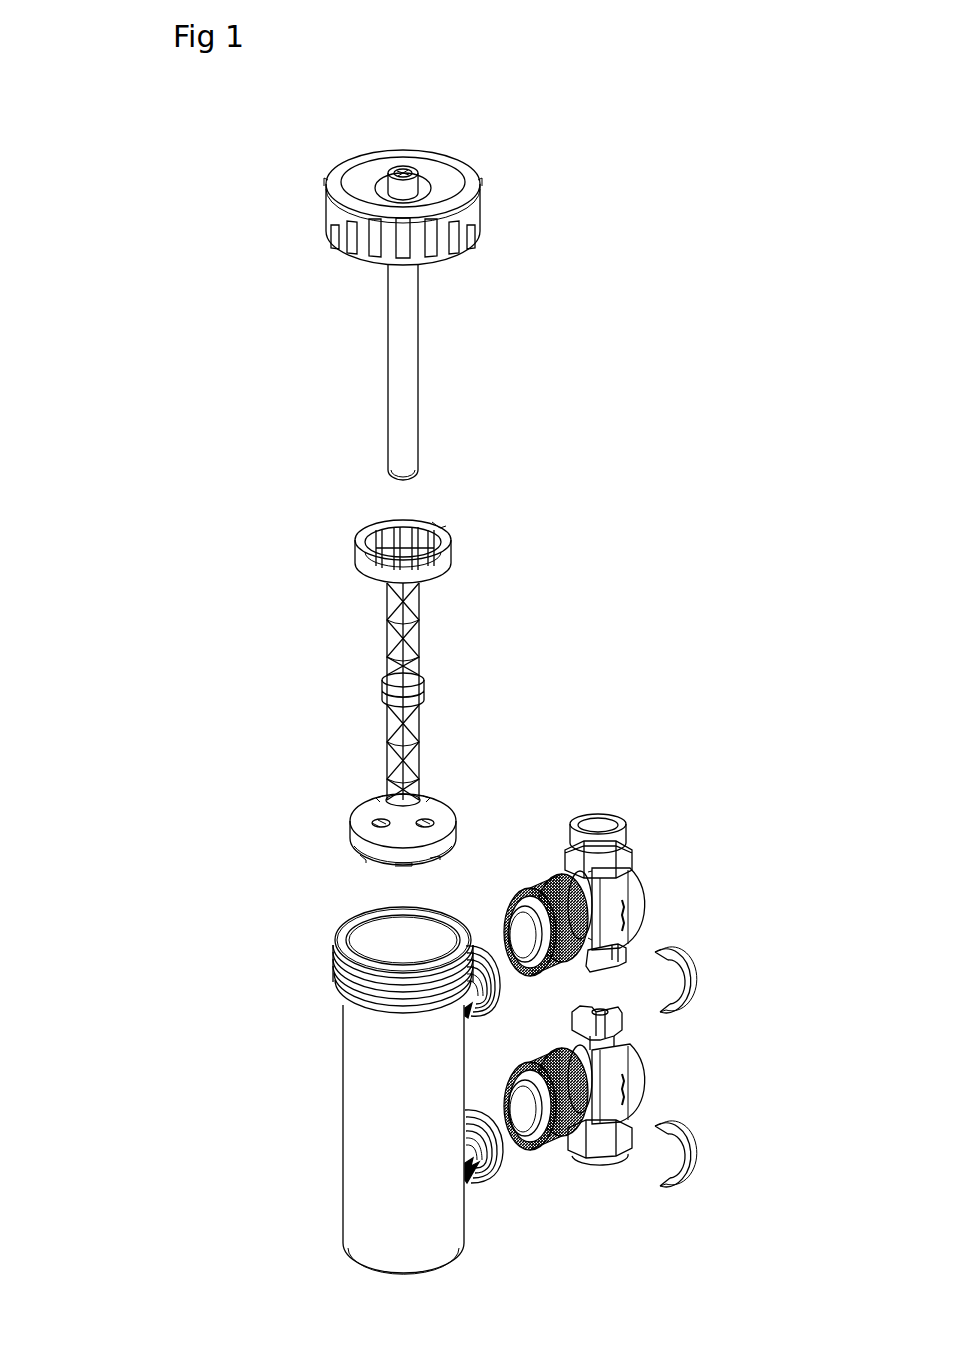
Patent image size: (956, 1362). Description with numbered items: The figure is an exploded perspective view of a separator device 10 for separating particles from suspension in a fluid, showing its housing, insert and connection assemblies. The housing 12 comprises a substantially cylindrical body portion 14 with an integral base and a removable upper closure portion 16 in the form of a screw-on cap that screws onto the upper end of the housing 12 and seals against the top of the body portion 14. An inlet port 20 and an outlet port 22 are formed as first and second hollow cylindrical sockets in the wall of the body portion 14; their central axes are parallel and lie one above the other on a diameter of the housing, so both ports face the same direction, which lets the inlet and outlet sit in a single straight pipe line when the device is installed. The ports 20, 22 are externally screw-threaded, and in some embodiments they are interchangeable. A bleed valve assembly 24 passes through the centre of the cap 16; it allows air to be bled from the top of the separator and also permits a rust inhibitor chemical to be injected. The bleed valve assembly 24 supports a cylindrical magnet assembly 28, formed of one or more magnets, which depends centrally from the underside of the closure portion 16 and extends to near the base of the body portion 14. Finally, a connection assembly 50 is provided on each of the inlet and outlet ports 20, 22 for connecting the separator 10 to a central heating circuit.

The separator device 10 is at (184, 981).
The housing 12 is at (443, 1218).
The cylindrical body portion 14 is at (361, 1114).
The upper closure portion 16 is at (441, 195).
The inlet port 20 is at (489, 952).
The outlet port 22 is at (500, 1151).
The bleed valve assembly 24 is at (400, 165).
The magnet assembly 28 is at (403, 383).
The connection assembly 50 is at (637, 901).